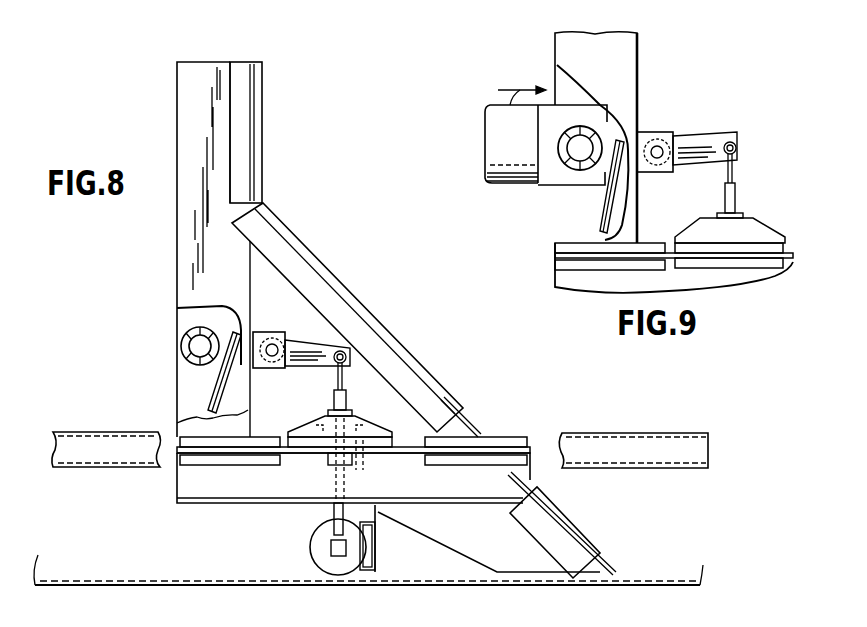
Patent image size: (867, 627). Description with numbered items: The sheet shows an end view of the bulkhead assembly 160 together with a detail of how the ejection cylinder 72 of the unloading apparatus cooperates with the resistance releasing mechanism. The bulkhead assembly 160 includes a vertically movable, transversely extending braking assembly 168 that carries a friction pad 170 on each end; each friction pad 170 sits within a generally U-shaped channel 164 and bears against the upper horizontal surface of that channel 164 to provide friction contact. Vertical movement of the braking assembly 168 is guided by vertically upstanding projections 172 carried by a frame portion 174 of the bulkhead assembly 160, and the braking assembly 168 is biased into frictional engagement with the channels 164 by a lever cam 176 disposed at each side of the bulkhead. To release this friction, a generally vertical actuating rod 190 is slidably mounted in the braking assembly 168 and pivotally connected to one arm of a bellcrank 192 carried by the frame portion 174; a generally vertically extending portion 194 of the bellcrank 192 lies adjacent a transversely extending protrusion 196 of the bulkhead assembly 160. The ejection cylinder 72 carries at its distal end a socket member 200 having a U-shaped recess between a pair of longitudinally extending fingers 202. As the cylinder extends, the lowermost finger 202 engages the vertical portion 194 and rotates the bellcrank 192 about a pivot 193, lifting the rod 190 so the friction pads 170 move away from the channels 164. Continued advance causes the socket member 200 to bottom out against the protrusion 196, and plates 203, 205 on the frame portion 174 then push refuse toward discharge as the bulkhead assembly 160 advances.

In FIG. 9, the ejection cylinder 72 is at (500, 190).
In FIG. 8, the bulkhead assembly 160 is at (208, 211).
In FIG. 9, the bulkhead assembly 160 is at (627, 63).
In FIG. 8, the U-shaped channel 164 is at (652, 437).
In FIG. 8, the braking assembly 168 is at (328, 413).
In FIG. 8, the friction pad 170 is at (355, 415).
In FIG. 8, the vertically upstanding projections 172 is at (297, 431).
In FIG. 8, the frame portion 174 is at (178, 292).
In FIG. 8, the lever cam 176 is at (333, 514).
In FIG. 8, the actuating rod 190 is at (334, 375).
In FIG. 9, the actuating rod 190 is at (736, 175).
In FIG. 8, the bellcrank 192 is at (291, 337).
In FIG. 9, the bellcrank 192 is at (719, 133).
In FIG. 8, the pivot 193 is at (272, 358).
In FIG. 9, the pivot 193 is at (660, 150).
In FIG. 8, the vertical portion of the bellcrank 194 is at (217, 378).
In FIG. 9, the vertical portion of the bellcrank 194 is at (612, 218).
In FIG. 8, the transversely extending protrusion 196 is at (181, 347).
In FIG. 9, the transversely extending protrusion 196 is at (600, 140).
In FIG. 9, the socket member 200 is at (549, 189).
In FIG. 9, the finger 202 is at (600, 194).
In FIG. 8, the plate 203 is at (262, 150).
In FIG. 8, the plate 205 is at (305, 242).